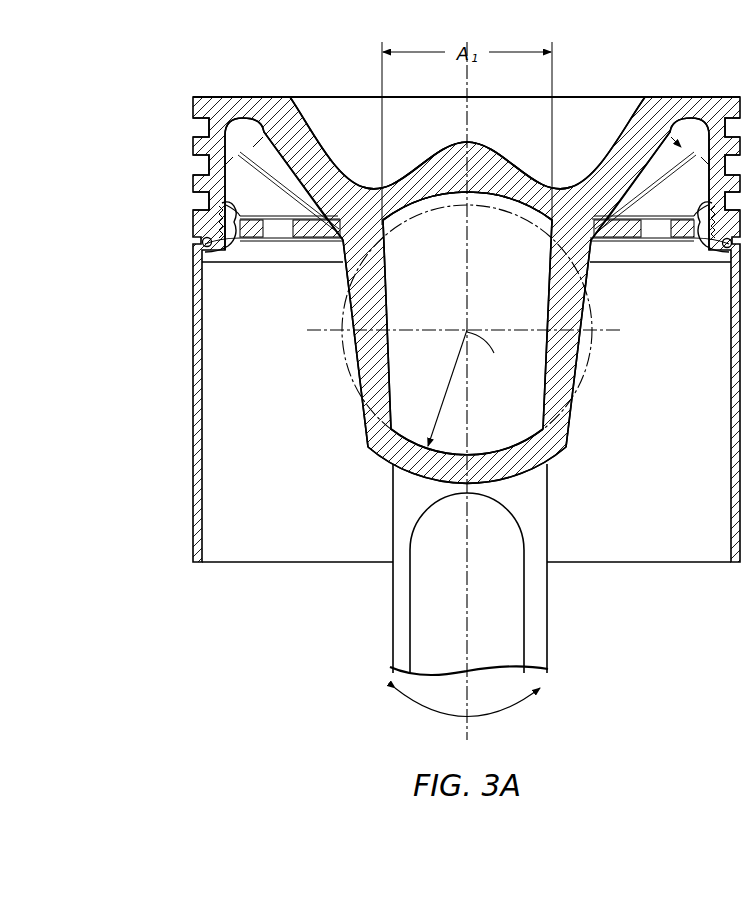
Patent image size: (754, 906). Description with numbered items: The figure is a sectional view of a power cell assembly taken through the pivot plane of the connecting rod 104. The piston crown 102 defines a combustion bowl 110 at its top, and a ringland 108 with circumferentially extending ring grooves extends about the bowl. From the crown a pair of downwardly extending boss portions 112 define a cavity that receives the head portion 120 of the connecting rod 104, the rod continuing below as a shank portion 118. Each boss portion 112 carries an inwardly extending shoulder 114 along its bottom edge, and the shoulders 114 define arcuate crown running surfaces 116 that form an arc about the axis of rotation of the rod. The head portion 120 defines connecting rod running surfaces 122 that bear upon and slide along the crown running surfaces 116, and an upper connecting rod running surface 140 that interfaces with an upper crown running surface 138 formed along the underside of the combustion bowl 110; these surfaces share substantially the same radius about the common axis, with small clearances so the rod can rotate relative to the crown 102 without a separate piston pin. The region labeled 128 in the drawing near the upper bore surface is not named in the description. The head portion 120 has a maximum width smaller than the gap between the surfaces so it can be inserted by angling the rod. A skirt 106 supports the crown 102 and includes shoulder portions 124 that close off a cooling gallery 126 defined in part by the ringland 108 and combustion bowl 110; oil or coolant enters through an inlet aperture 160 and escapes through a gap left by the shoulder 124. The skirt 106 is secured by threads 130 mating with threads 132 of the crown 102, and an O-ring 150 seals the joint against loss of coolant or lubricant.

The piston crown 102 is at (215, 108).
The connecting rod 104 is at (538, 596).
The skirt 106 is at (200, 412).
The ringland 108 is at (186, 100).
The combustion bowl 110 is at (590, 118).
The boss portions 112 is at (343, 325).
The shoulders 114 is at (372, 440).
The crown running surfaces 116 is at (567, 397).
The shank portion 118 is at (540, 661).
The head portion 120 is at (370, 385).
The connecting rod running surfaces 122 is at (493, 458).
The shoulder portions 124 is at (298, 234).
The cooling gallery 126 is at (265, 199).
The pin bore upper surface 128 is at (410, 215).
The threads 130 is at (248, 236).
The threads 132 is at (226, 241).
The upper crown running surface 138 is at (456, 195).
The upper connecting rod running surface 140 is at (498, 188).
The O-ring 150 is at (205, 245).
The inlet aperture 160 is at (226, 210).